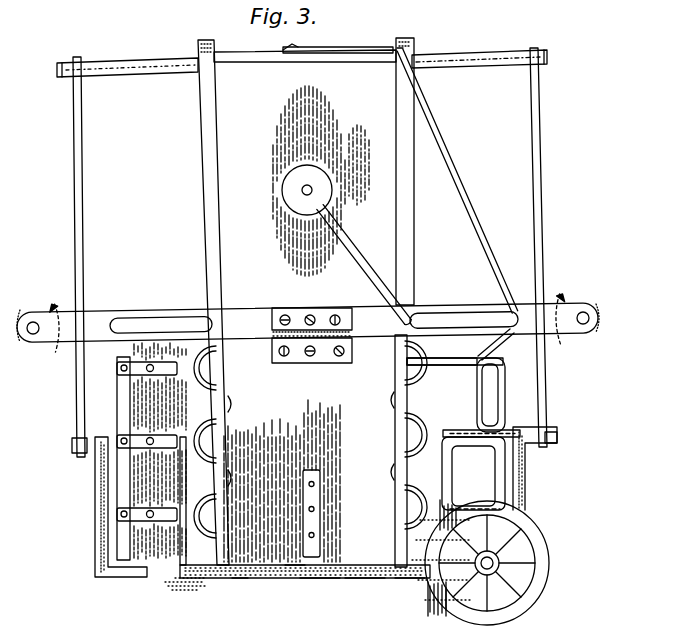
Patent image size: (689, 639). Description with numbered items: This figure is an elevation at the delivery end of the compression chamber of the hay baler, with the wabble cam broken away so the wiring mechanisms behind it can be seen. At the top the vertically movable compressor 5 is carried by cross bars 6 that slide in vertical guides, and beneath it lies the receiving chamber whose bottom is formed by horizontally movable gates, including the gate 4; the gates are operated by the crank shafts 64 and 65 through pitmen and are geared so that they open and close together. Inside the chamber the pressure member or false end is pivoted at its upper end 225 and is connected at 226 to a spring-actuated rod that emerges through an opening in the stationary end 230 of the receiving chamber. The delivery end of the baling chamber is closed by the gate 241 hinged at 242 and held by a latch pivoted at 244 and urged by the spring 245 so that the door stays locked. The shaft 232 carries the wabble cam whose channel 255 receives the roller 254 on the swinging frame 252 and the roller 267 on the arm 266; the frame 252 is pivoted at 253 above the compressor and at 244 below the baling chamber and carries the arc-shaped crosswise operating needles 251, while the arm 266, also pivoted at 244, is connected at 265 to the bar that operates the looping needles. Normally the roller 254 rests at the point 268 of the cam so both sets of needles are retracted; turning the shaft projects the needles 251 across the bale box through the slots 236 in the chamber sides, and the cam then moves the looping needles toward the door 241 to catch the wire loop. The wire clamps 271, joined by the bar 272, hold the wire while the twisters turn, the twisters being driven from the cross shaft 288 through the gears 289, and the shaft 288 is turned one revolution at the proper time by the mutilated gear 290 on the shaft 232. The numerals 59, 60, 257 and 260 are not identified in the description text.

The gate 4 is at (415, 312).
The compressor 5 is at (195, 312).
The cross bars 6 is at (466, 68).
The pipe support 59 is at (97, 497).
The frame post 60 is at (72, 213).
The crank shaft 64 is at (578, 338).
The crank shaft 65 is at (33, 341).
The upper end pivot 225 is at (347, 243).
The rod connection 226 is at (292, 201).
The stationary end 230 is at (321, 176).
The shaft 232 is at (513, 597).
The slots 236 is at (397, 432).
The gate 241 is at (397, 366).
The hinge 242 is at (275, 298).
The pivot 244 is at (318, 581).
The spring 245 is at (365, 580).
The crosswise operating needles 251 is at (452, 366).
The swinging frame 252 is at (505, 428).
The pivot 253 is at (300, 48).
The roller 254 is at (450, 506).
The channel 255 is at (440, 606).
The lower post 257 is at (397, 357).
The wheel 260 is at (547, 584).
The pivot 265 is at (300, 577).
The arm 266 is at (150, 576).
The roller 267 is at (428, 600).
The point of the cam 268 is at (410, 580).
The wire clamps 271 is at (151, 451).
The bar 272 is at (120, 402).
The cross shaft 288 is at (240, 580).
The gears 289 is at (192, 586).
The mutilated gear 290 is at (520, 550).